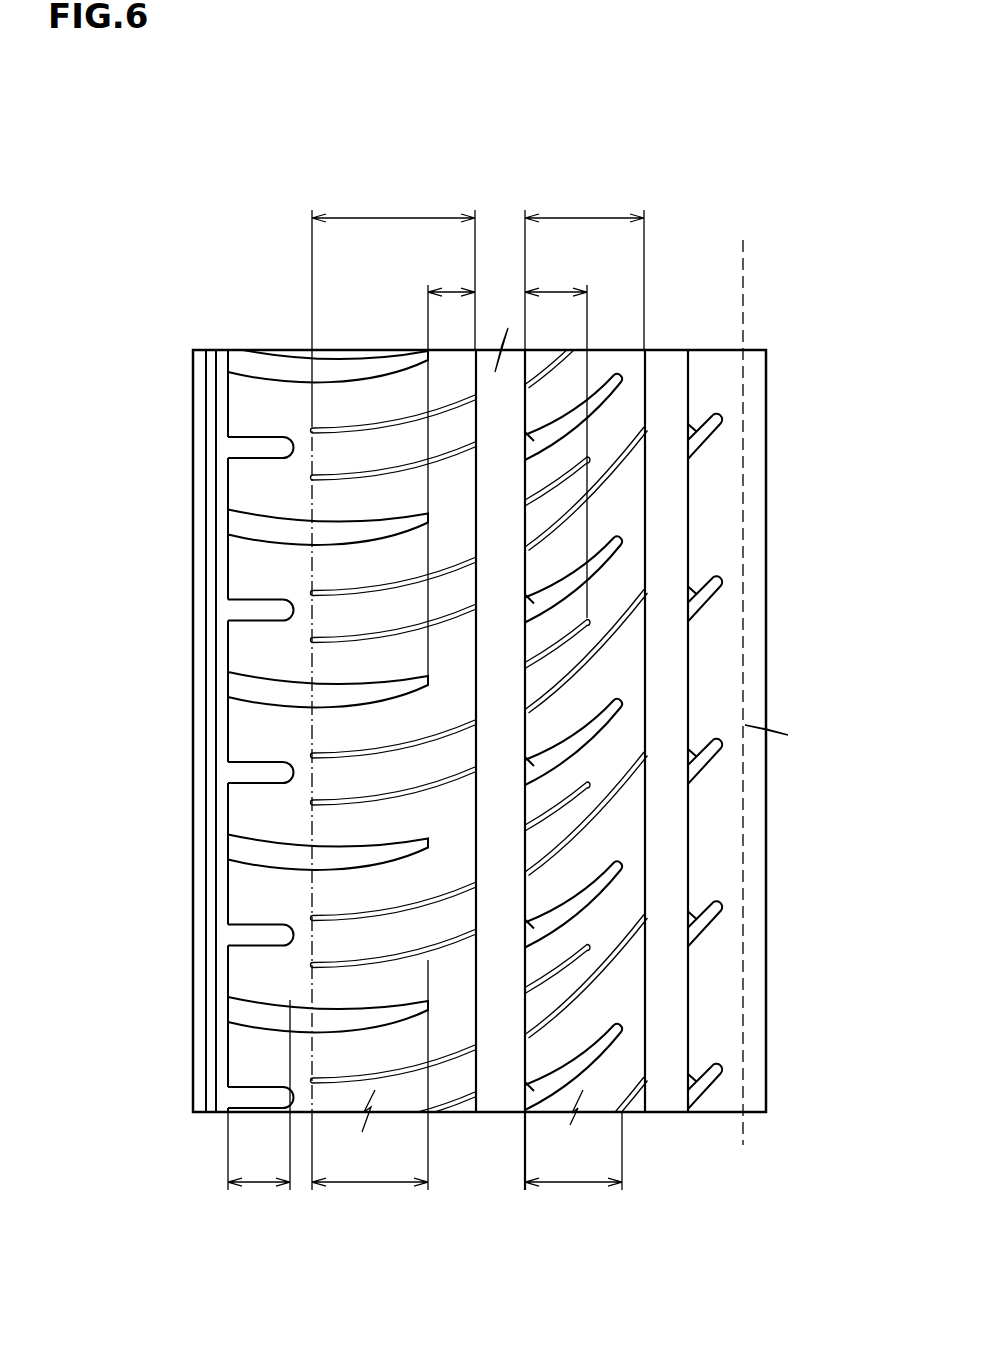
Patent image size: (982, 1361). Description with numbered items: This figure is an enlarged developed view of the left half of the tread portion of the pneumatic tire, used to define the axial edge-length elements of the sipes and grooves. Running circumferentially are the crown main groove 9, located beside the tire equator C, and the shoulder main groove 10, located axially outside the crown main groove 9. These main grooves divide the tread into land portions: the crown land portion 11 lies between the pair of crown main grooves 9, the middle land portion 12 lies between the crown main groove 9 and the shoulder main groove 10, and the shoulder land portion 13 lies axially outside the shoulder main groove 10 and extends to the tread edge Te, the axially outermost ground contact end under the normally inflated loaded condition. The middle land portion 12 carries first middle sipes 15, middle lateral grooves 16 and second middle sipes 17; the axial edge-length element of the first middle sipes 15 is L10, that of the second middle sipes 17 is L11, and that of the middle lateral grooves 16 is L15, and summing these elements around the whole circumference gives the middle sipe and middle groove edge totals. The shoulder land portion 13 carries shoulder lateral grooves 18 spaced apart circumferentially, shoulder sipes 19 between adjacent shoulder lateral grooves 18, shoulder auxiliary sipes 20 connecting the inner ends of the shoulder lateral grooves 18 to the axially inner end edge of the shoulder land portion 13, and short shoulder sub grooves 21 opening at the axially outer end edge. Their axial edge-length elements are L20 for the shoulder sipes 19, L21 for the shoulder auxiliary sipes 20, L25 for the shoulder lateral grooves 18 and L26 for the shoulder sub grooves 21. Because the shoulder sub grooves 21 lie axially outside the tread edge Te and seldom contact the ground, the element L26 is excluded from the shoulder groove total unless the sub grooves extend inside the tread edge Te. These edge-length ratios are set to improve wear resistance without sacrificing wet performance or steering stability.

The crown main groove 9 is at (668, 1085).
The shoulder main groove 10 is at (500, 1082).
The crown land portion 11 is at (712, 380).
The middle land portion 12 is at (625, 408).
The shoulder land portion 13 is at (255, 599).
The first middle sipe 15 is at (610, 477).
The middle lateral groove 16 is at (525, 988).
The second middle sipe 17 is at (525, 710).
The shoulder lateral groove 18 is at (343, 855).
The shoulder sipe 19 is at (388, 591).
The shoulder auxiliary sipe 20 is at (452, 508).
The shoulder sub groove 21 is at (252, 938).
The tread edge Te is at (312, 413).
The tire equator C is at (744, 681).
The element of edge length of first middle sipe L10 is at (584, 265).
The element of edge length of second middle sipe L11 is at (556, 436).
The element of edge length of shoulder sipe L20 is at (393, 298).
The element of edge length of shoulder auxiliary sipe L21 is at (444, 465).
The element of edge length of middle lateral groove L15 is at (573, 1172).
The element of edge length of shoulder lateral groove L25 is at (370, 1092).
The element of edge length of shoulder sub groove L26 is at (259, 1112).